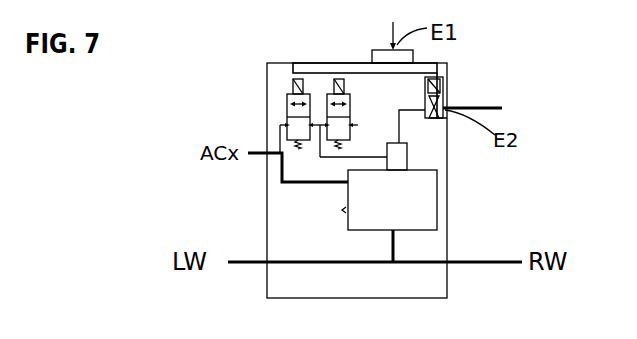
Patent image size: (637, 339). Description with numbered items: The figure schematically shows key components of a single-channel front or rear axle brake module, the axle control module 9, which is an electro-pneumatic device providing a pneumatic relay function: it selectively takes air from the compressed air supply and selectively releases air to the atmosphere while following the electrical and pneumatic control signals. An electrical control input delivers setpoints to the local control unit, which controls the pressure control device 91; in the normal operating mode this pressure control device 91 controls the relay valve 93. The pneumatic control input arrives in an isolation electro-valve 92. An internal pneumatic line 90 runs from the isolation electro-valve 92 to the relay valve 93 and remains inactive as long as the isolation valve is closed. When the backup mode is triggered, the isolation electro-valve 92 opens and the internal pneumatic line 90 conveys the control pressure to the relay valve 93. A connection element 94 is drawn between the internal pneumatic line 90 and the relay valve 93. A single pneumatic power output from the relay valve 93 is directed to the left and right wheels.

The axle control module 9 is at (314, 49).
The internal pneumatic line 90 is at (397, 120).
The pressure control device 91 is at (284, 103).
The isolation electro-valve 92 is at (446, 92).
The relay valve 93 is at (437, 203).
The connection block / port 94 is at (407, 156).